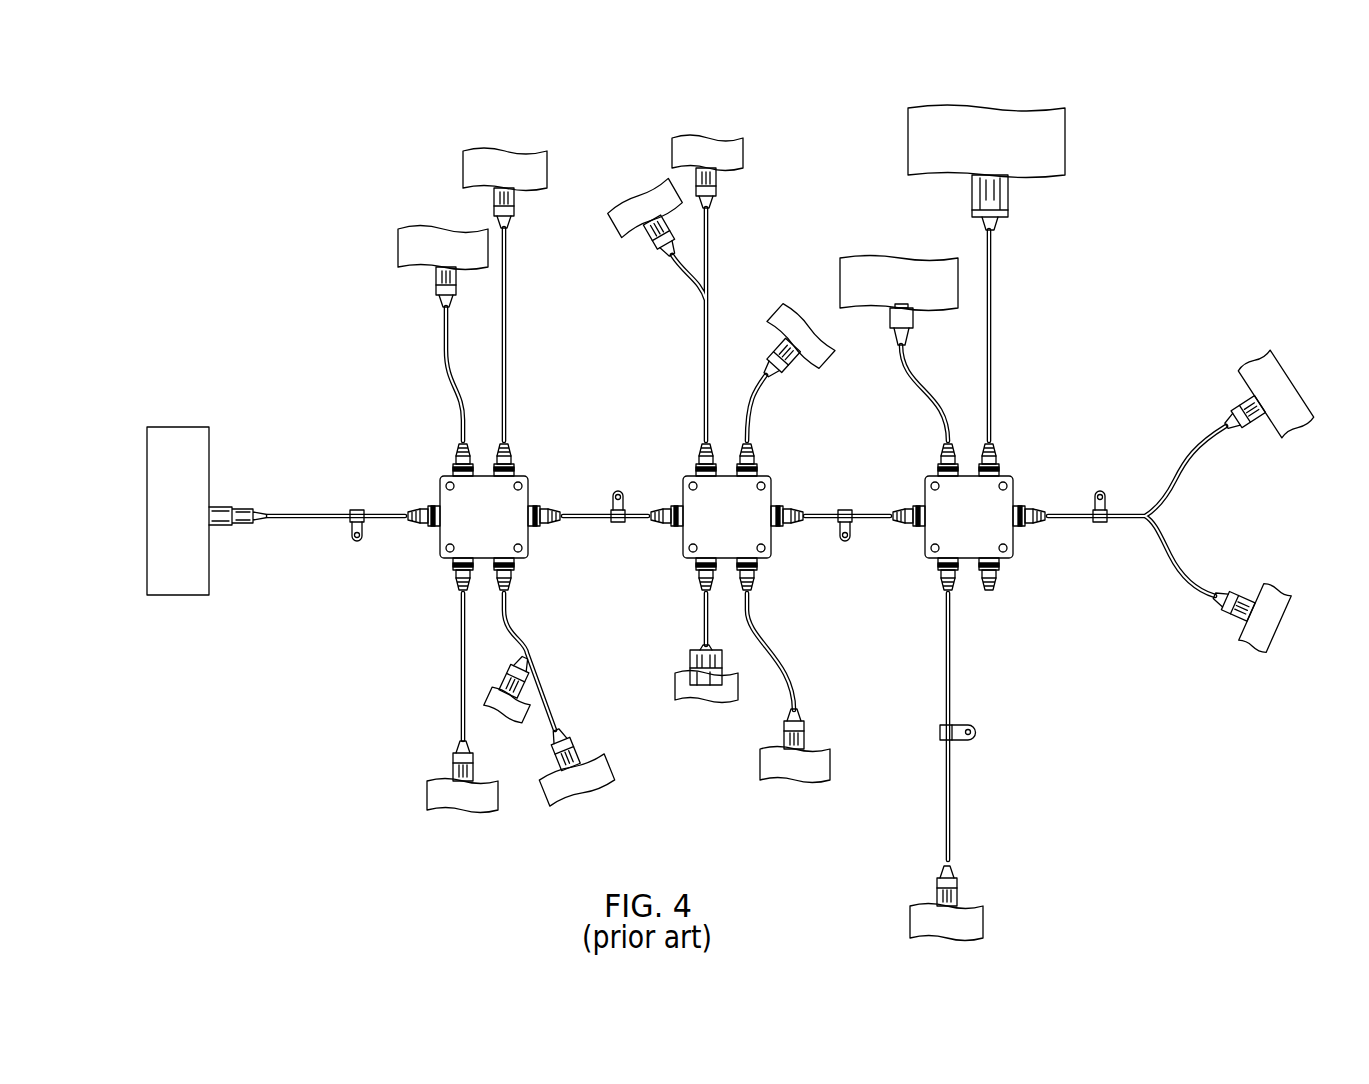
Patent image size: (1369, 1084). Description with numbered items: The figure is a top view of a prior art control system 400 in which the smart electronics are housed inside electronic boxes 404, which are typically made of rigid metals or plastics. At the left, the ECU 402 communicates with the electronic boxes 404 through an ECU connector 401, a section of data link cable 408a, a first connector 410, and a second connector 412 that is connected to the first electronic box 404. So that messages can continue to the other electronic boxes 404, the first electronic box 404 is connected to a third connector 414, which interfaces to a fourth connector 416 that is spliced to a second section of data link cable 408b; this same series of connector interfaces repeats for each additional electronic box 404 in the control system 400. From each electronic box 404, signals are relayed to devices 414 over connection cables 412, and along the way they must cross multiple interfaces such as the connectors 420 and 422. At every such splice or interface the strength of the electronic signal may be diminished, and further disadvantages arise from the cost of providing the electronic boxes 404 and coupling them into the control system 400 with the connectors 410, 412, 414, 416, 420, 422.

The control system 400 is at (286, 208).
The ECU connector 401 is at (238, 507).
The ECU 402 is at (178, 427).
The electronic box 404 is at (440, 480).
The data link cable 408a is at (292, 512).
The data link cable 408b is at (582, 511).
The first connector 410 is at (407, 522).
The second connector 412 is at (418, 530).
The third connector 414 is at (550, 525).
The fourth connector 416 is at (565, 526).
The connector 420 is at (697, 570).
The connector 422 is at (703, 612).